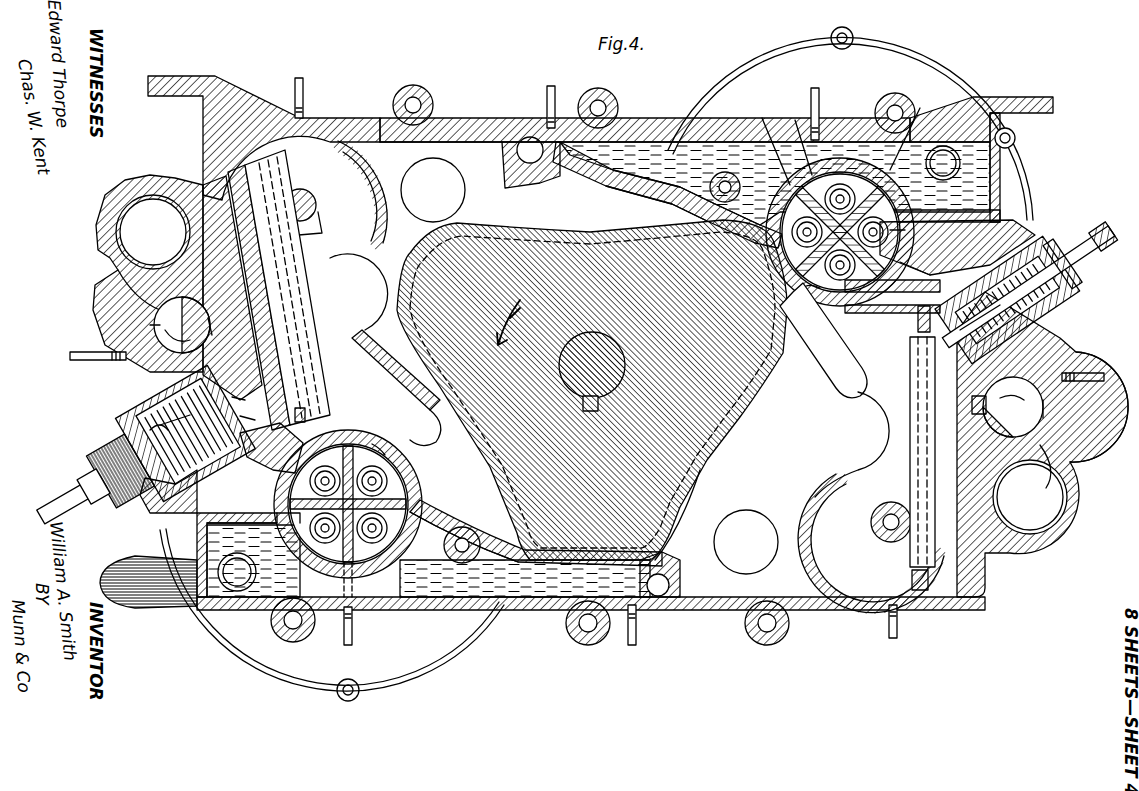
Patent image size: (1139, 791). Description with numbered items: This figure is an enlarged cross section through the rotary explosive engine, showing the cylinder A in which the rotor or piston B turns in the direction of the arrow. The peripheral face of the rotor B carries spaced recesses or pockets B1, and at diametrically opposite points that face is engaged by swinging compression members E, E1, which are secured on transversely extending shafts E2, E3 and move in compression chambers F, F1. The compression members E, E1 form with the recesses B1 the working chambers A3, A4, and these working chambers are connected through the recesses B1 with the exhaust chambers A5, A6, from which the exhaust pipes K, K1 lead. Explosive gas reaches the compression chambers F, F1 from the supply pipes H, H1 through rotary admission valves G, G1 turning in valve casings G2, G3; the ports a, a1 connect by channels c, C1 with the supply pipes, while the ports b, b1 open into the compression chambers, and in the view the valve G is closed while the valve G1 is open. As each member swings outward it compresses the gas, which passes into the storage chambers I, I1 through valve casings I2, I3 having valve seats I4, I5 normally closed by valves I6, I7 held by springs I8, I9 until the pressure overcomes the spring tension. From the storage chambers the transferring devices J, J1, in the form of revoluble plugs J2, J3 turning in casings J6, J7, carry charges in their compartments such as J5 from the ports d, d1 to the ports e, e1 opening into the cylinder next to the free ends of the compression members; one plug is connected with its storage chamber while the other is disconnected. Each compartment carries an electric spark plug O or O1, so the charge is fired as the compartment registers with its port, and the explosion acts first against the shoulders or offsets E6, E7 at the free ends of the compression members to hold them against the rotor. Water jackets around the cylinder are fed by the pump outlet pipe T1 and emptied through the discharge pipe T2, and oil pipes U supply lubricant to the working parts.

The cylinder A is at (640, 142).
The working chamber A3 is at (464, 525).
The working chamber A4 is at (655, 205).
The exhaust chamber A5 is at (677, 515).
The exhaust chamber A6 is at (441, 154).
The rotor or piston B is at (575, 242).
The recesses or pockets B1 is at (483, 462).
The channel c is at (114, 272).
The exhaust pipe K is at (763, 523).
The exhaust pipe K1 is at (458, 187).
The compression member E is at (320, 303).
The compression member E1 is at (878, 434).
The shaft E2 is at (335, 192).
The shaft E3 is at (872, 523).
The shoulder or offset E6 is at (396, 388).
The shoulder or offset E7 is at (823, 340).
The port e is at (378, 440).
The port e1 is at (808, 297).
The compression chamber F is at (259, 297).
The compression chamber F1 is at (866, 314).
The admission valve G is at (182, 325).
The admission valve G1 is at (1003, 416).
The valve casing G2 is at (154, 422).
The valve casing G3 is at (1050, 428).
The supply pipe H is at (148, 273).
The supply pipe H1 is at (1042, 444).
The storage chamber I is at (242, 503).
The storage chamber I1 is at (957, 247).
The valve casing I2 is at (110, 395).
The valve casing I3 is at (1066, 343).
The valve seat I4 is at (239, 390).
The valve seat I5 is at (915, 257).
The valve I6 is at (249, 409).
The valve I7 is at (936, 433).
The spring I8 is at (175, 410).
The spring I9 is at (980, 324).
The transferring device J is at (408, 470).
The transferring device J1 is at (850, 165).
The revoluble plug J2 is at (334, 419).
The revoluble plug J3 is at (905, 126).
The compartments J5 is at (793, 133).
The casing J6 is at (271, 444).
The casing J7 is at (756, 138).
The electric spark plug O is at (380, 475).
The electric spark plug O1 is at (820, 185).
The outlet pipe T1 is at (135, 606).
The discharge pipe T2 is at (962, 163).
The oil pipes U is at (1098, 373).
The port a is at (150, 327).
The port a1 is at (984, 399).
The port b is at (213, 330).
The port b1 is at (1054, 412).
The channel C1 is at (1062, 448).
The port d is at (275, 512).
The port d1 is at (909, 230).